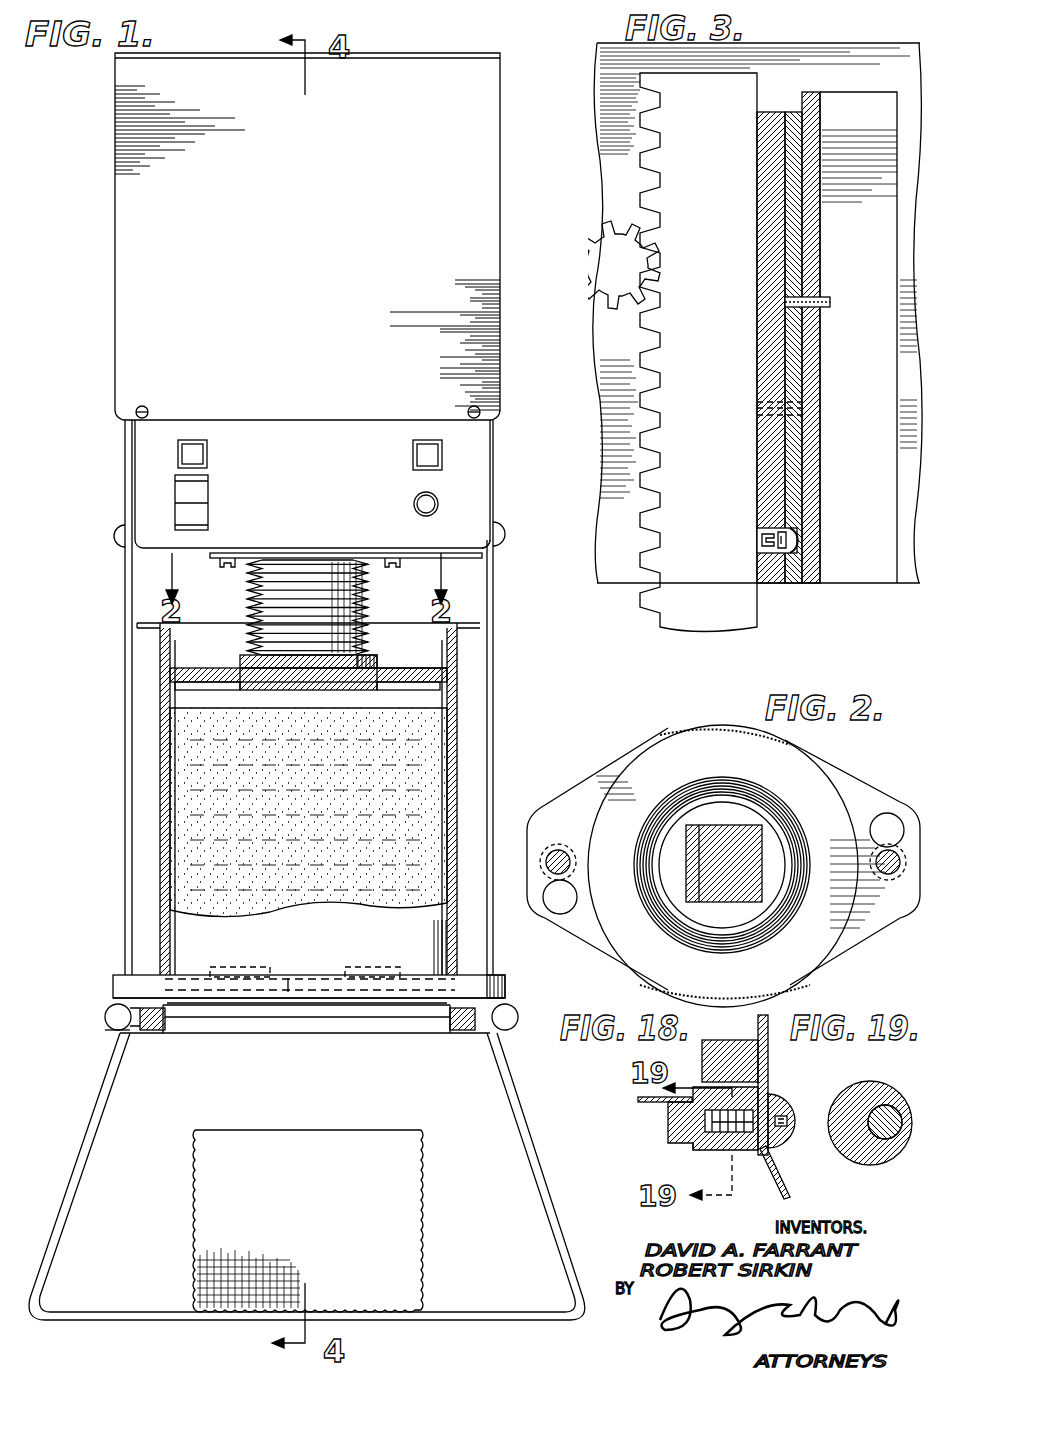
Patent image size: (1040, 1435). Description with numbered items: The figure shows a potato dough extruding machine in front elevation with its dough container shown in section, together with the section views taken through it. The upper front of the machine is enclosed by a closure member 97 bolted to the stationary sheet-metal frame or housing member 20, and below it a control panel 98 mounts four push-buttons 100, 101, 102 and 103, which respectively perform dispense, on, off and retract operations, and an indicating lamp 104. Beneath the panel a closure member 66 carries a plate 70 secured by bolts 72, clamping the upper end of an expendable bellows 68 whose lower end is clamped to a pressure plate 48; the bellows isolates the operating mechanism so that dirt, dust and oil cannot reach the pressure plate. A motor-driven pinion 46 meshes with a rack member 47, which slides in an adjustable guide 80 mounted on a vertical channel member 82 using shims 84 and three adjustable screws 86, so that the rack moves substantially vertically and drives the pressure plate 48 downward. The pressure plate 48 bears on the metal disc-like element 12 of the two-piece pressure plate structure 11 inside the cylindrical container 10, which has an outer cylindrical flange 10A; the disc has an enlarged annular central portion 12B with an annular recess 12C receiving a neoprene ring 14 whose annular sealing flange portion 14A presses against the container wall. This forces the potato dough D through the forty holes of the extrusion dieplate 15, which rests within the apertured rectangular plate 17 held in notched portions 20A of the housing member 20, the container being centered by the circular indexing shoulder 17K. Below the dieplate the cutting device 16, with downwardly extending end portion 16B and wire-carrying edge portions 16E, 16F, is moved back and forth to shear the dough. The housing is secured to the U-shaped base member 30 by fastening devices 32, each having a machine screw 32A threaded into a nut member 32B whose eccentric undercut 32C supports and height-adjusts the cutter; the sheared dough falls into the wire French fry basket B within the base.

In FIG. 1, the closure member 97 is at (135, 298).
In FIG. 1, the control panel 98 is at (312, 432).
In FIG. 1, the push-button 100 is at (200, 455).
In FIG. 1, the push-button 101 is at (208, 484).
In FIG. 1, the push-button 102 is at (208, 508).
In FIG. 1, the push-button 103 is at (420, 456).
In FIG. 1, the indicating lamp 104 is at (418, 499).
In FIG. 1, the closure member 66 is at (465, 545).
In FIG. 1, the plate 70 is at (255, 552).
In FIG. 2, the plate 70 is at (592, 790).
In FIG. 1, the bolts 72 is at (228, 568).
In FIG. 2, the bolts 72 is at (888, 850).
In FIG. 1, the bellows 68 is at (252, 602).
In FIG. 2, the bellows 68 is at (697, 726).
In FIG. 1, the pressure plate 48 is at (372, 655).
In FIG. 1, the pressure plate structure 11 is at (398, 662).
In FIG. 1, the container 10 is at (160, 760).
In FIG. 1, the outer cylindrical flange 10A is at (160, 623).
In FIG. 1, the neoprene ring 14 is at (444, 692).
In FIG. 1, the annular sealing flange portion 14A is at (165, 695).
In FIG. 1, the metal disc-like element 12 is at (205, 667).
In FIG. 1, the enlarged annular central portion 12B is at (322, 690).
In FIG. 1, the annular recess 12C is at (240, 692).
In FIG. 1, the potato dough D is at (195, 808).
In FIG. 1, the frame or housing member 20 is at (127, 857).
In FIG. 18, the frame or housing member 20 is at (768, 1062).
In FIG. 1, the notched portion 20A is at (118, 975).
In FIG. 1, the circular indexing shoulder 17K is at (168, 975).
In FIG. 1, the edge portion 16F is at (205, 990).
In FIG. 1, the edge portion 16E is at (417, 996).
In FIG. 1, the extrusion dieplate 15 is at (290, 975).
In FIG. 1, the plate 17 is at (324, 990).
In FIG. 18, the plate 17 is at (725, 1050).
In FIG. 1, the cutting device 16 is at (380, 1010).
In FIG. 18, the cutting device 16 is at (638, 1100).
In FIG. 1, the downwardly extending end portion 16B is at (300, 1010).
In FIG. 1, the fastening devices 32 is at (152, 1022).
In FIG. 18, the fastening devices 32 is at (790, 1110).
In FIG. 19, the fastening devices 32 is at (877, 1156).
In FIG. 1, the machine screw 32A is at (118, 1008).
In FIG. 18, the machine screw 32A is at (785, 1140).
In FIG. 19, the machine screw 32A is at (890, 1112).
In FIG. 1, the nut member 32B is at (118, 1030).
In FIG. 18, the nut member 32B is at (693, 1146).
In FIG. 19, the nut member 32B is at (868, 1098).
In FIG. 1, the undercut 32C is at (175, 1030).
In FIG. 18, the undercut 32C is at (668, 1130).
In FIG. 1, the base member 30 is at (115, 1060).
In FIG. 18, the base member 30 is at (779, 1185).
In FIG. 1, the wire French fry basket B is at (300, 1142).
In FIG. 3, the rack member 47 is at (688, 350).
In FIG. 2, the rack member 47 is at (740, 837).
In FIG. 3, the pinion 46 is at (622, 275).
In FIG. 3, the adjustable guide 80 is at (765, 145).
In FIG. 3, the shims 84 is at (792, 228).
In FIG. 3, the adjustable screws 86 is at (798, 532).
In FIG. 3, the channel member 82 is at (805, 553).